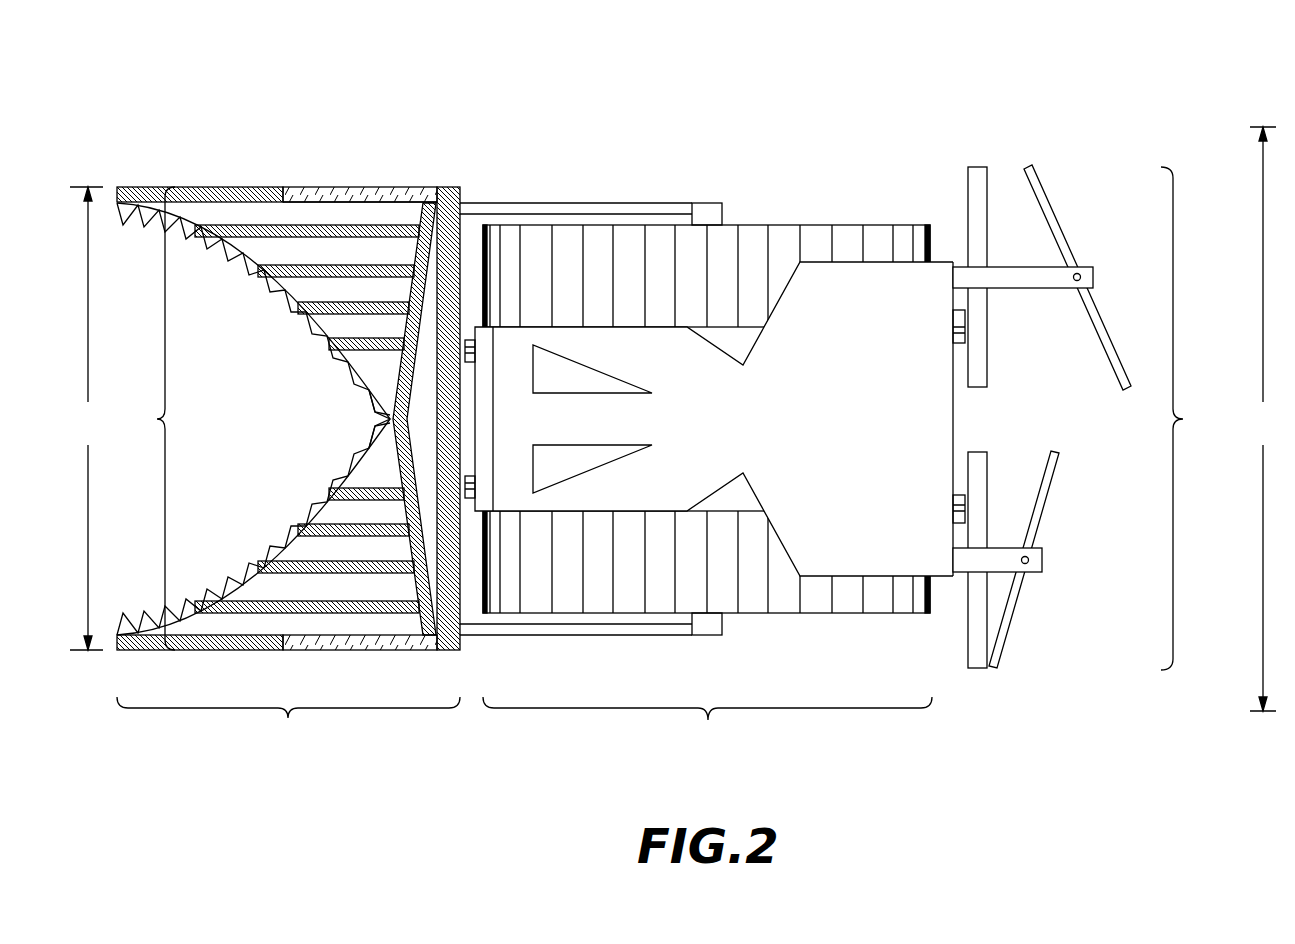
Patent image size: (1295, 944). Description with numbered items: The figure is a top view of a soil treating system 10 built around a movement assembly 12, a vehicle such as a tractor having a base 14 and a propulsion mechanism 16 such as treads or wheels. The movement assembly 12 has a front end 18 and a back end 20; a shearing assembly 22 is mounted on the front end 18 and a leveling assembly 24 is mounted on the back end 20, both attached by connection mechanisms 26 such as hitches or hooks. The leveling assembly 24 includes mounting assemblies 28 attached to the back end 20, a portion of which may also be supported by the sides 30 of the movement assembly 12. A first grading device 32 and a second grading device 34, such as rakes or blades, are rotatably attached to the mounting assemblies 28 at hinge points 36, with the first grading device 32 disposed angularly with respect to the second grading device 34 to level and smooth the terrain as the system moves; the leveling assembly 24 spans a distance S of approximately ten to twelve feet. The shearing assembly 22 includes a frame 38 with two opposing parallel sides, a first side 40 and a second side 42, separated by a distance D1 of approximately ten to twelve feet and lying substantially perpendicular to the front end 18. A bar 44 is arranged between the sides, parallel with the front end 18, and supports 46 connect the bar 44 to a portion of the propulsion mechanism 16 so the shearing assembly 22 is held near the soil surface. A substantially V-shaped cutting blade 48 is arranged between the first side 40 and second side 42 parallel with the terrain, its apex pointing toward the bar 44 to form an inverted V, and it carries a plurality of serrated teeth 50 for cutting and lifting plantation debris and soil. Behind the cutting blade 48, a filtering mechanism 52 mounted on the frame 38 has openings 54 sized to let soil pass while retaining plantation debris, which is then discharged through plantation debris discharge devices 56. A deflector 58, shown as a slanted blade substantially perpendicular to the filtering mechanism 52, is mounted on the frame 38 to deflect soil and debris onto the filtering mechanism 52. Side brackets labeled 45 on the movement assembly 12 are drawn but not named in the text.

The soil treating system 10 is at (885, 86).
The movement assembly 12 is at (740, 456).
The base 14 is at (840, 293).
The propulsion mechanism 16 is at (752, 240).
The front end 18 is at (487, 405).
The back end 20 is at (958, 418).
The shearing assembly 22 is at (292, 438).
The leveling assembly 24 is at (1104, 419).
The connection mechanisms 26 is at (462, 355).
The mounting assemblies 28 is at (975, 170).
The sides 30 is at (944, 260).
The first grading device 32 is at (1037, 183).
The second grading device 34 is at (1042, 502).
The hinge points 36 is at (1093, 278).
The frame 38 is at (400, 215).
The first side 40 is at (218, 187).
The second side 42 is at (218, 650).
The bar 44 is at (462, 192).
The side brackets 45 is at (612, 203).
The supports 46 is at (313, 287).
The cutting blade 48 is at (370, 415).
The serrated teeth 50 is at (295, 510).
The filtering mechanism 52 is at (150, 418).
The openings 54 is at (330, 215).
The plantation debris discharge devices 56 is at (372, 186).
The deflector 58 is at (415, 615).
The distance D1 is at (87, 418).
The distance S is at (1263, 419).